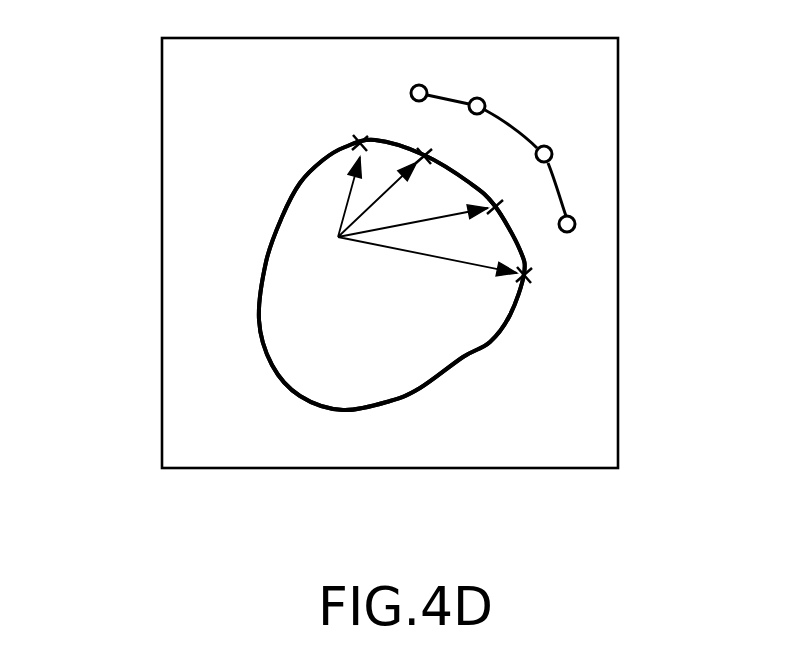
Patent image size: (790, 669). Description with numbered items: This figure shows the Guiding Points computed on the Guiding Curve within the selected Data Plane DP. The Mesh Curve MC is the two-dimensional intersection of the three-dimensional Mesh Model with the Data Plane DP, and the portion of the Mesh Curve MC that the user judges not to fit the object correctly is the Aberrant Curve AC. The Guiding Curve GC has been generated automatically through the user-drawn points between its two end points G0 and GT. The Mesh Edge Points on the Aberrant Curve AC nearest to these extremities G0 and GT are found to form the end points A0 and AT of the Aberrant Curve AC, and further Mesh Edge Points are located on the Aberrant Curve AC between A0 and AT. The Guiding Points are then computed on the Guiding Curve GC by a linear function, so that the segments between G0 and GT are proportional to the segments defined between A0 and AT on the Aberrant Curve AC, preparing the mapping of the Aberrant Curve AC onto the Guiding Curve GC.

The Data Plane DP is at (150, 383).
The Aberrant Curve AC is at (522, 255).
The Mesh Curve MC is at (463, 357).
The end point of the Aberrant Curve A0 is at (360, 143).
The end point of the Aberrant Curve AT is at (531, 275).
The Guiding Curve GC is at (447, 99).
The end point G0 is at (411, 93).
The end point GT is at (576, 223).